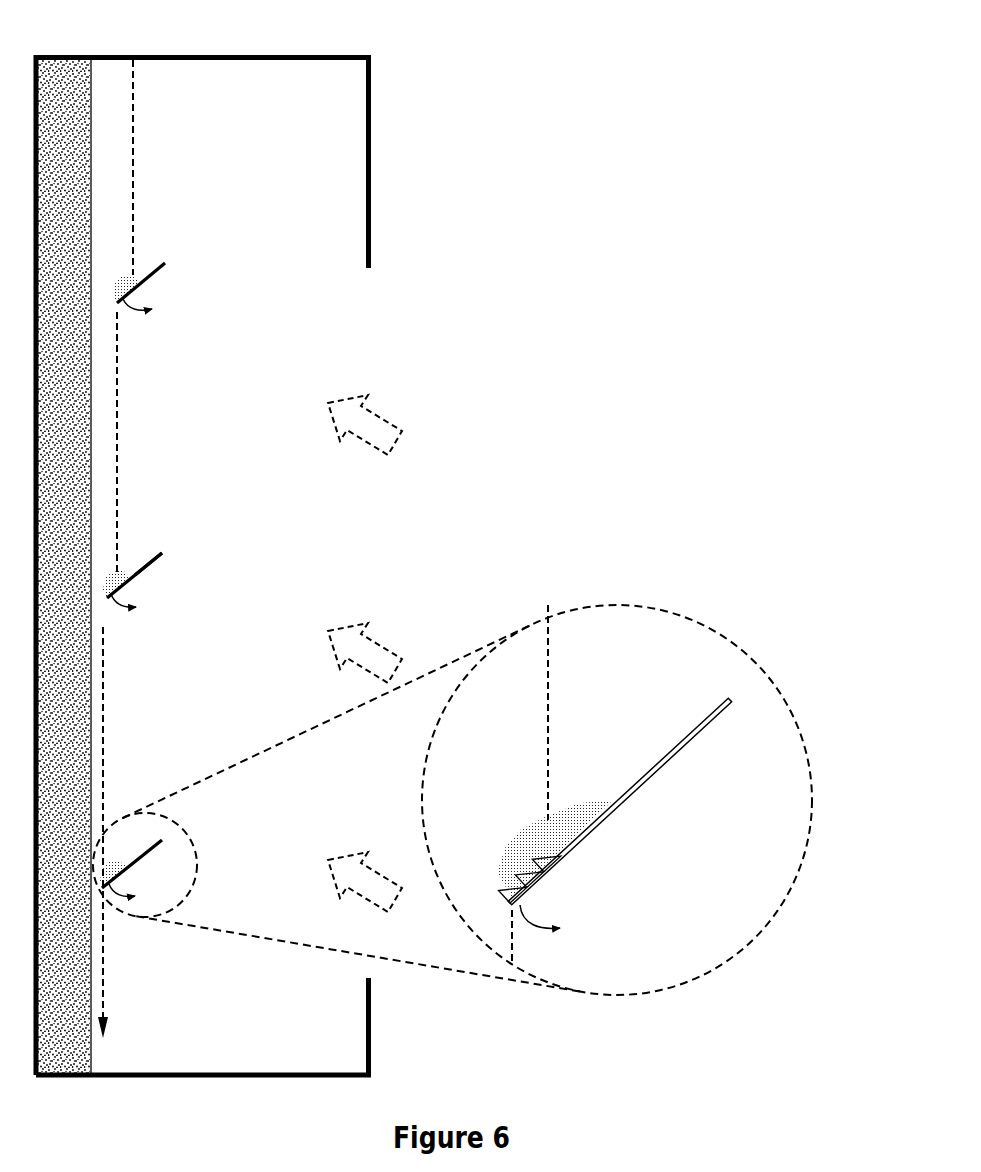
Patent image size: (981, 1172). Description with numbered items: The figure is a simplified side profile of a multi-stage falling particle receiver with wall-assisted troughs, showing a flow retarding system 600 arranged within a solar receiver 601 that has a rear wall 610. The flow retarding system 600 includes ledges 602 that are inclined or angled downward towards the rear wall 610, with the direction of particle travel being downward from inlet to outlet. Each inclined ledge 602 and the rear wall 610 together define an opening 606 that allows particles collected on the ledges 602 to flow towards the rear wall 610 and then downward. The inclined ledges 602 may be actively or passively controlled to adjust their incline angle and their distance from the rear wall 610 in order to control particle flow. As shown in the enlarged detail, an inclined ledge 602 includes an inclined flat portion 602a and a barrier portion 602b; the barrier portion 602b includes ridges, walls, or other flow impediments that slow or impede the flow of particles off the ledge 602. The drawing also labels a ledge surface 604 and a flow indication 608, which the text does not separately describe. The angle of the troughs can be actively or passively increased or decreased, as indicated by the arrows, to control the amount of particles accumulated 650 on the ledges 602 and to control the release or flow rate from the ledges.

The solar receiver 601 is at (241, 57).
The rear wall 610 is at (92, 415).
The flow retarding system 600 is at (167, 252).
The particles accumulated 650 is at (135, 280).
The air flow 608 is at (396, 410).
The ledges 602 is at (166, 539).
The fin upper portion 604 is at (152, 565).
The opening 606 is at (104, 608).
The inclined flat portion 602a is at (625, 807).
The barrier portion 602b is at (538, 884).